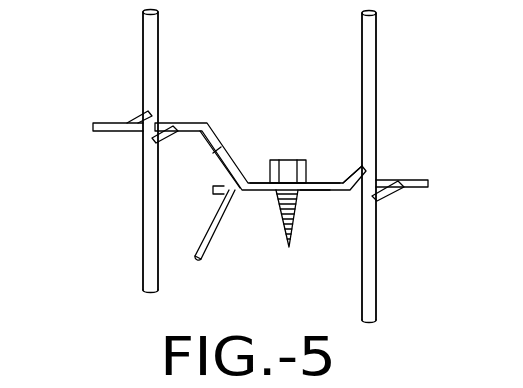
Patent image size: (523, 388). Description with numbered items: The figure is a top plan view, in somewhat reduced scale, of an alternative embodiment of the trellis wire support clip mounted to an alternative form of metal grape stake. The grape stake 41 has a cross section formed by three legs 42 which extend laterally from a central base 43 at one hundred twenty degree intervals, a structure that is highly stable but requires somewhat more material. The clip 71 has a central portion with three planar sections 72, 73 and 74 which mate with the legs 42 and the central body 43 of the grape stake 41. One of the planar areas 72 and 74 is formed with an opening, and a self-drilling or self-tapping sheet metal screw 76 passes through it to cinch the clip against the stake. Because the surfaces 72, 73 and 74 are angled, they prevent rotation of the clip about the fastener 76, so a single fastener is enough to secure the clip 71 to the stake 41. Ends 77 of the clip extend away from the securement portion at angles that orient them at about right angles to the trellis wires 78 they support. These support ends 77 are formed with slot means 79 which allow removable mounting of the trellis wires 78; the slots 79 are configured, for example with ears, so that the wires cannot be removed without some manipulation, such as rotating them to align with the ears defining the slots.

The metal grape stake 41 is at (234, 210).
The legs 42 is at (220, 147).
The central base 43 is at (215, 187).
The trellis wire support clip 71 is at (210, 119).
The planar section 72 is at (220, 147).
The planar section 73 is at (248, 173).
The planar section 74 is at (323, 173).
The sheet metal screw 76 is at (290, 244).
The support ends 77 is at (103, 135).
The trellis wires 78 is at (158, 44).
The slot means 79 is at (162, 117).